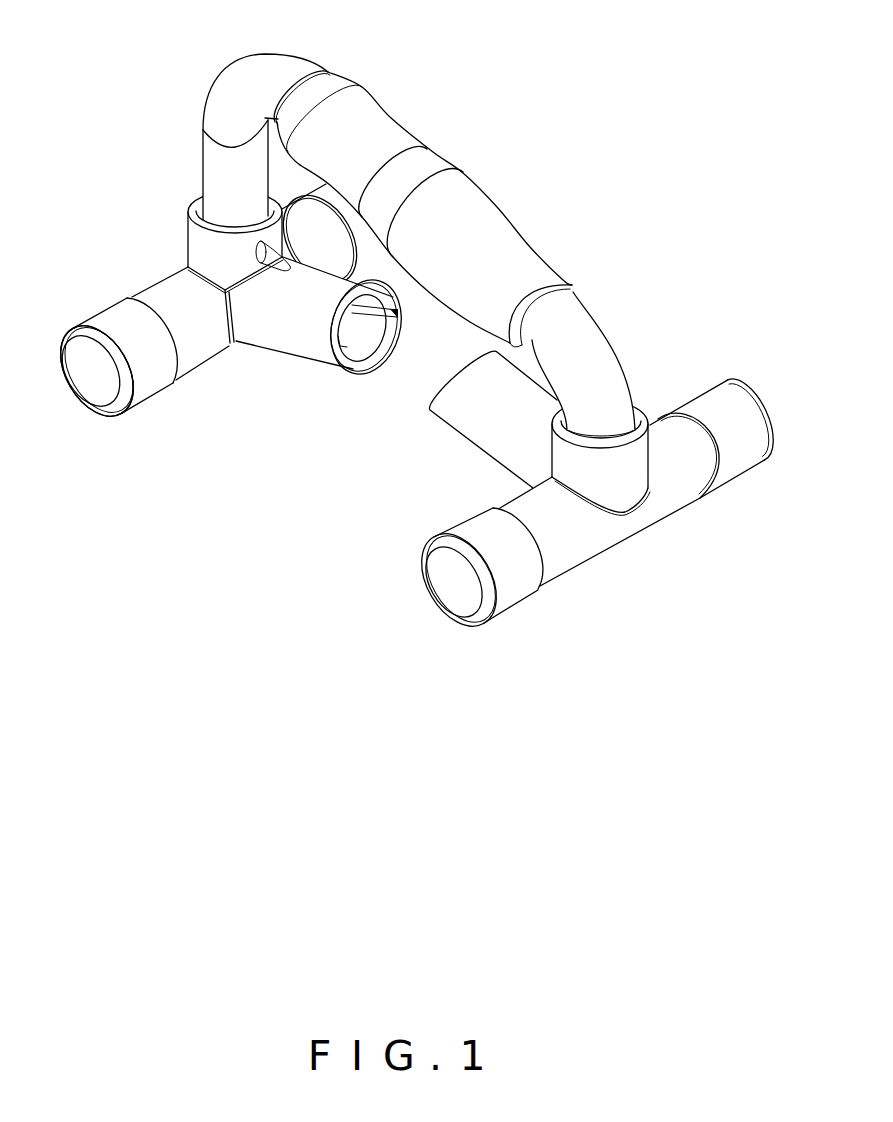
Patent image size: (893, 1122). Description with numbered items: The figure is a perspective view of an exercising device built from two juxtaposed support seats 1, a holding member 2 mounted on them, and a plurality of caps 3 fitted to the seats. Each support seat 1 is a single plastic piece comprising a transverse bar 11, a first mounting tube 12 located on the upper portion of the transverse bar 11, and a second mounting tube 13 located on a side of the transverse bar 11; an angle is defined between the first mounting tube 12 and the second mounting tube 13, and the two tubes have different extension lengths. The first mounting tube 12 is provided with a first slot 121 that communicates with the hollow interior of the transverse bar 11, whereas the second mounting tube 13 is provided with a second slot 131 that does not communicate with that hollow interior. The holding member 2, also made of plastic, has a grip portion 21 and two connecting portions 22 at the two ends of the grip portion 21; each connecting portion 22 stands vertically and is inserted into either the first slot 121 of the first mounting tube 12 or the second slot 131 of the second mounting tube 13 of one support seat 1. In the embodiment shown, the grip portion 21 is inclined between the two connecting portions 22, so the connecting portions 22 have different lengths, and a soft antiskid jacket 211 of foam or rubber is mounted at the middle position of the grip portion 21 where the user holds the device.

The support seat 1 is at (220, 309).
The holding member 2 is at (376, 225).
The cap 3 is at (68, 420).
The transverse bar 11 is at (198, 350).
The first mounting tube 12 is at (180, 198).
The first slot 121 is at (204, 199).
The second mounting tube 13 is at (318, 358).
The second slot 131 is at (367, 345).
The grip portion 21 is at (565, 298).
The connecting portion 22 is at (198, 163).
The soft antiskid jacket 211 is at (440, 166).